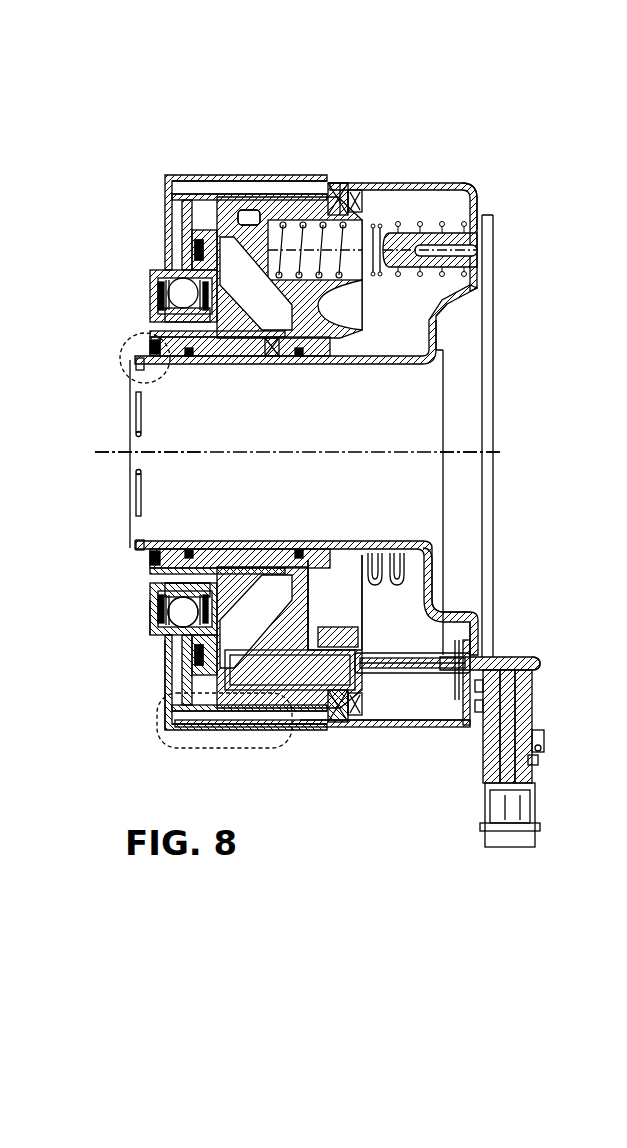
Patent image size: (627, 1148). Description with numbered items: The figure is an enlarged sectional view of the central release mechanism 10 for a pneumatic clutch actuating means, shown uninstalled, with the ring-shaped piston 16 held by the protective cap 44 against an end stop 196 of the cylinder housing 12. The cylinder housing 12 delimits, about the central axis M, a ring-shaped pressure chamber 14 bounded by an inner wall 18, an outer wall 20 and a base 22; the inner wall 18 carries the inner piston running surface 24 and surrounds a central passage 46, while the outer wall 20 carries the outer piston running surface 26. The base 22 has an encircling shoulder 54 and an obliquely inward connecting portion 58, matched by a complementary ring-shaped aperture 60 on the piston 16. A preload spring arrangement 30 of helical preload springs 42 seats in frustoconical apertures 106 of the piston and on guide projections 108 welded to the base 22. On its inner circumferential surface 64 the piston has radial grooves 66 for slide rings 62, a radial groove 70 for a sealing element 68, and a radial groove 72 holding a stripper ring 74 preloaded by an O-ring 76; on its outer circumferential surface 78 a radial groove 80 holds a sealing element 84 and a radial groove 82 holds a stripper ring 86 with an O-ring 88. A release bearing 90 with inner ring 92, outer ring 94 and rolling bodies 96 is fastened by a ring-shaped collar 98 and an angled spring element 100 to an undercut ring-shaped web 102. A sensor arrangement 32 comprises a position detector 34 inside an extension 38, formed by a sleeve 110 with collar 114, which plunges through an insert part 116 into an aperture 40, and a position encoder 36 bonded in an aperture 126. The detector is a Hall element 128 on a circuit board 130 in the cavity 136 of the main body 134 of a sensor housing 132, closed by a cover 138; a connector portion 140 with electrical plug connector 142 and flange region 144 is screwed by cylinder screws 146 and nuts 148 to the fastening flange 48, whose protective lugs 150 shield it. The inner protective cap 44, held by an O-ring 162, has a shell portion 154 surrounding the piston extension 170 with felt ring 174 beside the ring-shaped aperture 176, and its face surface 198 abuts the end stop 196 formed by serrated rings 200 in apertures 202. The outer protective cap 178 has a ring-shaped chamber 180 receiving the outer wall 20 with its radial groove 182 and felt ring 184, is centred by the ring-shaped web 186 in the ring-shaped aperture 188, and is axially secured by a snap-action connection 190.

The central release mechanism 10 is at (478, 152).
The cylinder housing 12 is at (407, 181).
The pressure chamber 14 is at (452, 219).
The ring-shaped piston 16 is at (332, 312).
The inner wall 18 is at (345, 545).
The outer wall 20 is at (412, 728).
The base 22 is at (482, 198).
The inner piston running surface 24 is at (377, 360).
The outer piston running surface 26 is at (395, 712).
The preload spring arrangement 30 is at (472, 290).
The sensor arrangement 32 is at (378, 632).
The position detector 34 is at (397, 688).
The position encoder 36 is at (342, 628).
The extension 38 is at (458, 642).
The aperture 40 is at (248, 680).
The preload springs 42 is at (369, 273).
The protective cap 44 is at (150, 578).
The central passage 46 is at (176, 482).
The fastening flange 48 is at (480, 250).
The shoulder 54 is at (449, 306).
The connecting portion 58 is at (437, 330).
The ring-shaped aperture 60 is at (304, 299).
The slide rings 62 is at (190, 360).
The inner circumferential surface 64 is at (226, 356).
The radial grooves 66 is at (181, 552).
The sealing element 68 is at (271, 357).
The radial groove 70 is at (225, 560).
The radial groove 72 is at (142, 550).
The stripper ring 74 is at (158, 363).
The O-ring 76 is at (162, 364).
The outer circumferential surface 78 is at (256, 190).
The radial groove 80 is at (352, 200).
The radial groove 82 is at (341, 195).
The sealing element 84 is at (341, 726).
The stripper ring 86 is at (316, 722).
The O-ring 88 is at (290, 700).
The release bearing 90 is at (190, 660).
The inner ring 92 is at (180, 612).
The outer ring 94 is at (210, 665).
The rolling bodies 96 is at (150, 640).
The ring-shaped collar 98 is at (195, 250).
The angled spring element 100 is at (199, 242).
The ring-shaped web 102 is at (200, 234).
The frustoconical apertures 106 is at (340, 220).
The guide projections 108 is at (470, 265).
The sleeve 110 is at (430, 655).
The collar 114 is at (531, 700).
The insert part 116 is at (321, 570).
The aperture 126 is at (322, 627).
The Hall element 128 is at (355, 668).
The circuit board 130 is at (463, 697).
The sensor housing 132 is at (535, 673).
The main body 134 is at (476, 692).
The cavity 136 is at (457, 659).
The cover 138 is at (444, 653).
The connector portion 140 is at (535, 786).
The electrical plug connector 142 is at (512, 832).
The flange region 144 is at (478, 712).
The cylinder screws 146 is at (531, 728).
The nuts 148 is at (546, 745).
The protective lugs 150 is at (540, 658).
The shell portion 154 is at (228, 320).
The O-ring 162 is at (132, 364).
The piston extension 170 is at (226, 562).
The felt ring 174 is at (180, 576).
The ring-shaped aperture 176 is at (258, 592).
The protective cap 178 is at (172, 176).
The ring-shaped chamber 180 is at (190, 186).
The radial groove 182 is at (331, 190).
The felt ring 184 is at (326, 183).
The ring-shaped web 186 is at (178, 745).
The ring-shaped aperture 188 is at (210, 708).
The snap-action connection 190 is at (226, 180).
The end stop 196 is at (129, 352).
The face surface 198 is at (150, 545).
The serrated rings 200 is at (135, 418).
The apertures 202 is at (134, 473).
The central axis M is at (460, 452).